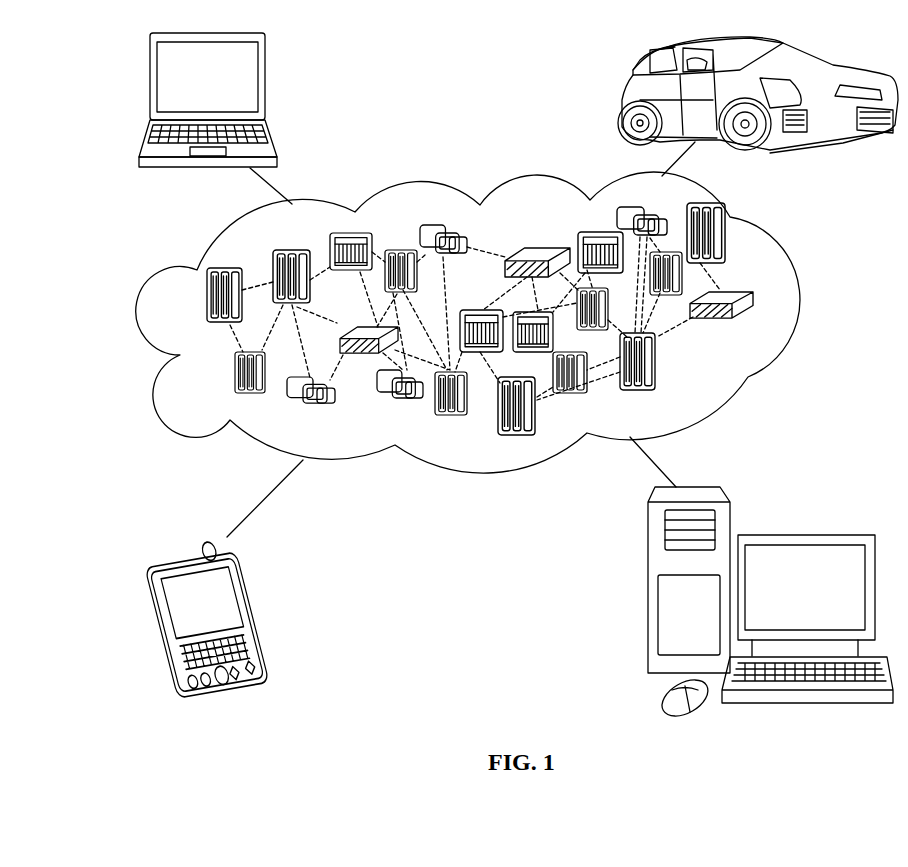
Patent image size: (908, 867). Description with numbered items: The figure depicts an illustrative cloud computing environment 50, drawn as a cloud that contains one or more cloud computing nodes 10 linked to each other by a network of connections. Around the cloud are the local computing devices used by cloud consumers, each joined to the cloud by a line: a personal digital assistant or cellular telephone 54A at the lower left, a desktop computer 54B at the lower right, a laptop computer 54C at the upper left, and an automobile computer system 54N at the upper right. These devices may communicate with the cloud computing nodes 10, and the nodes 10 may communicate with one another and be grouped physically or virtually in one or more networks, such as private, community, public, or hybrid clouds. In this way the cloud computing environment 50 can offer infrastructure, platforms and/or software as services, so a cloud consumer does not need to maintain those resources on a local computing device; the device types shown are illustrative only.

The cloud computing node 10 is at (753, 327).
The cloud computing environment 50 is at (493, 322).
The personal digital assistant or cellular telephone 54A is at (257, 610).
The desktop computer 54B is at (803, 533).
The laptop computer 54C is at (265, 80).
The automobile computer system 54N is at (622, 100).